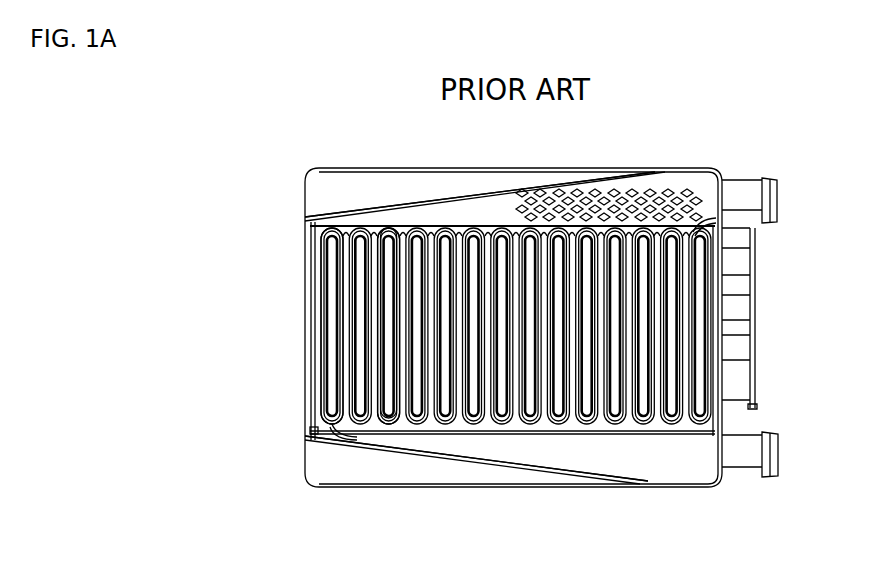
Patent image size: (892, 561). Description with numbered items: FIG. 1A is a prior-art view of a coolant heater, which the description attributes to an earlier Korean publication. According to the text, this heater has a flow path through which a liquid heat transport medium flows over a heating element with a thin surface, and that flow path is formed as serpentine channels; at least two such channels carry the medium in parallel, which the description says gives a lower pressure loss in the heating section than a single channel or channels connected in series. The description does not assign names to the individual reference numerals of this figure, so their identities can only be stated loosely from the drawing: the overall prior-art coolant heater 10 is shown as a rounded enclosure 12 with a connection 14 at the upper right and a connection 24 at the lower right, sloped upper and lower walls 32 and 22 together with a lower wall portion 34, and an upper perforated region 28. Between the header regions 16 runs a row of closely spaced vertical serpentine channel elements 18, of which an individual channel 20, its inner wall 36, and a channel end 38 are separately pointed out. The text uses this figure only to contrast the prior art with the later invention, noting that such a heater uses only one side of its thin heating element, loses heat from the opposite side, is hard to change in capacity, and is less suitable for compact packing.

The heat exchanger 10 is at (233, 138).
The housing 12 is at (406, 203).
The inlet pipe 14 is at (778, 199).
The header plate 16 is at (478, 208).
The tube bundle 18 is at (442, 233).
The tube 20 is at (336, 232).
The bottom tank wall 22 is at (547, 448).
The outlet pipe 24 is at (773, 455).
The perforated plate 28 is at (655, 192).
The top tank wall 32 is at (501, 197).
The bottom wall portion 34 is at (453, 455).
The tube inner wall 36 is at (373, 230).
The tube end 38 is at (393, 418).